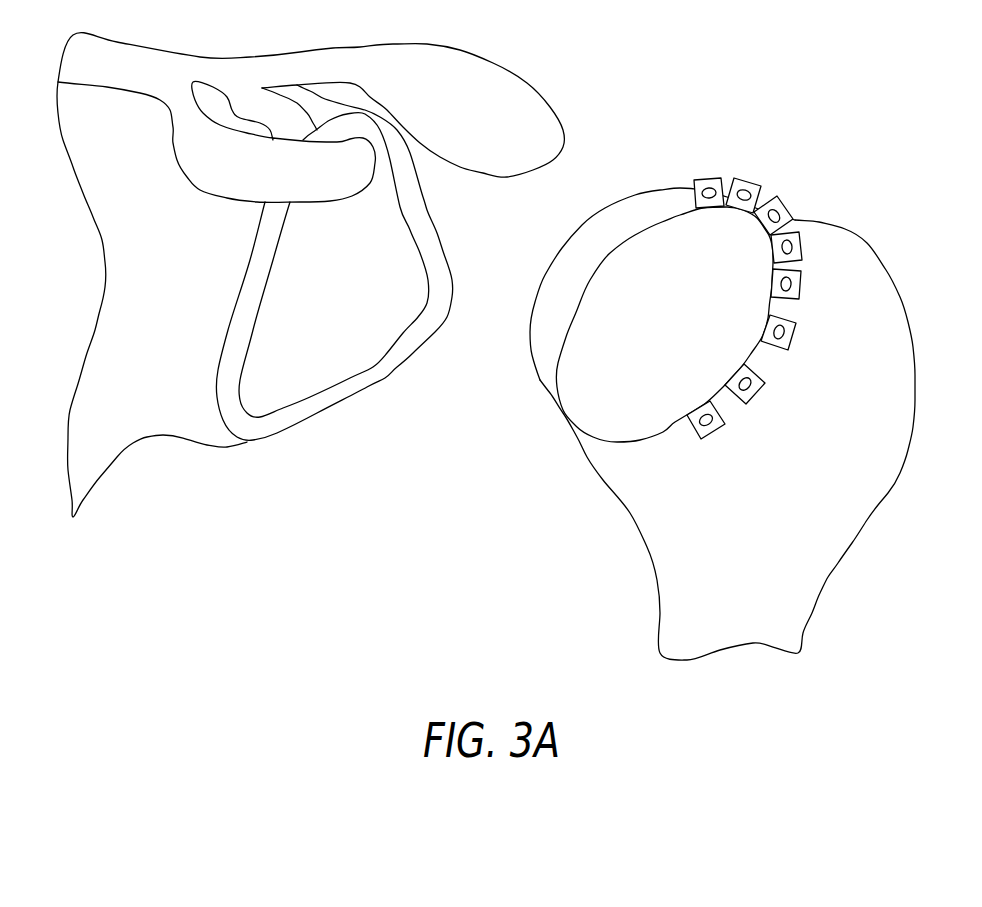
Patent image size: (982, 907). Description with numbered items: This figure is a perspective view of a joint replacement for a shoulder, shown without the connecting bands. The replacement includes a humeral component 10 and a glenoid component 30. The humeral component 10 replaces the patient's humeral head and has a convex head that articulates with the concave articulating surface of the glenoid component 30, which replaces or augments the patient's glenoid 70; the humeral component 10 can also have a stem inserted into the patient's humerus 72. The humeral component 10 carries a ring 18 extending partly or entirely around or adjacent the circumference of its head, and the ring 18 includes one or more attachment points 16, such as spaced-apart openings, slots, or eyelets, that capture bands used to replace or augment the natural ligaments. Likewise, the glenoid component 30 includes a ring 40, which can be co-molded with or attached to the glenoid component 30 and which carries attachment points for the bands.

The humeral component 10 is at (580, 248).
The attachment points 16 is at (757, 179).
The ring 18 is at (582, 438).
The glenoid component 30 is at (342, 350).
The ring 40 is at (307, 408).
The glenoid 70 is at (147, 422).
The humerus 72 is at (812, 560).